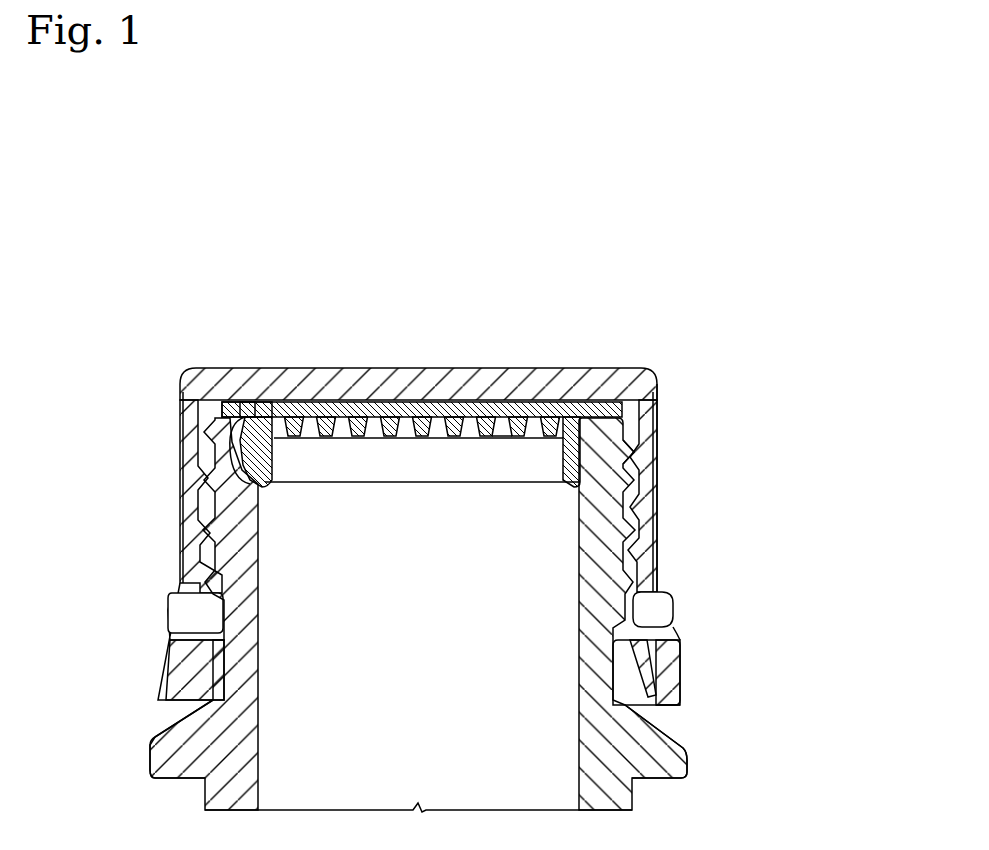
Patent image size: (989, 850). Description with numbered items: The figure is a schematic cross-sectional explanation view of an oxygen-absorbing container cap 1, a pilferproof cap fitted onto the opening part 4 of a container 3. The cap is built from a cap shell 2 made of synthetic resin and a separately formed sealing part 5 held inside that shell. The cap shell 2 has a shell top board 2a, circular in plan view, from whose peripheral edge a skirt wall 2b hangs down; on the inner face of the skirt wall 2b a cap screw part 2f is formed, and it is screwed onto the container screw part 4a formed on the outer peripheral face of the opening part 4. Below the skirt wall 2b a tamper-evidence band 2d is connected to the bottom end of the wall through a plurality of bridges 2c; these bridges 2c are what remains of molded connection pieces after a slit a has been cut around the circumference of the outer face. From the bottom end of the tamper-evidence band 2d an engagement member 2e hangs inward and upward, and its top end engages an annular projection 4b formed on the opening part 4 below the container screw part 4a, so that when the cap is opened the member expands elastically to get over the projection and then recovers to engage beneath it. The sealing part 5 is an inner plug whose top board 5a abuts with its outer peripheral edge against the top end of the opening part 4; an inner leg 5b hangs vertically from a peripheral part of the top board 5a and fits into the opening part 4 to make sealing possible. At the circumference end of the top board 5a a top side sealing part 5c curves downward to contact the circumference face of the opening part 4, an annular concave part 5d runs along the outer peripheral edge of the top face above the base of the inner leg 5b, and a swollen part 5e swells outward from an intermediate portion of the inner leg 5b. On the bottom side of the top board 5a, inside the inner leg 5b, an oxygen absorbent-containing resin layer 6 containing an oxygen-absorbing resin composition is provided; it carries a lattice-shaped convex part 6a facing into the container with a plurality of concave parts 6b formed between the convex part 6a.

The oxygen-absorbing container cap 1 is at (424, 287).
The cap shell 2 is at (650, 368).
The shell top board 2a is at (563, 384).
The skirt wall 2b is at (657, 430).
The bridge 2c is at (662, 592).
The tamper-evidence band 2d is at (673, 657).
The engagement member 2e is at (687, 768).
The cap screw part 2f is at (640, 540).
The container 3 is at (202, 798).
The opening part 4 is at (220, 441).
The container screw part 4a is at (610, 515).
The annular projection 4b is at (623, 627).
The sealing part 5 is at (367, 487).
The top board 5a is at (341, 401).
The inner leg 5b is at (275, 470).
The top side sealing part 5c is at (213, 401).
The annular concave part 5d is at (254, 400).
The swollen part 5e is at (238, 470).
The oxygen absorbent-containing resin layer 6 is at (443, 452).
The convex part 6a is at (512, 435).
The concave part 6b is at (493, 437).
The slit a is at (681, 626).